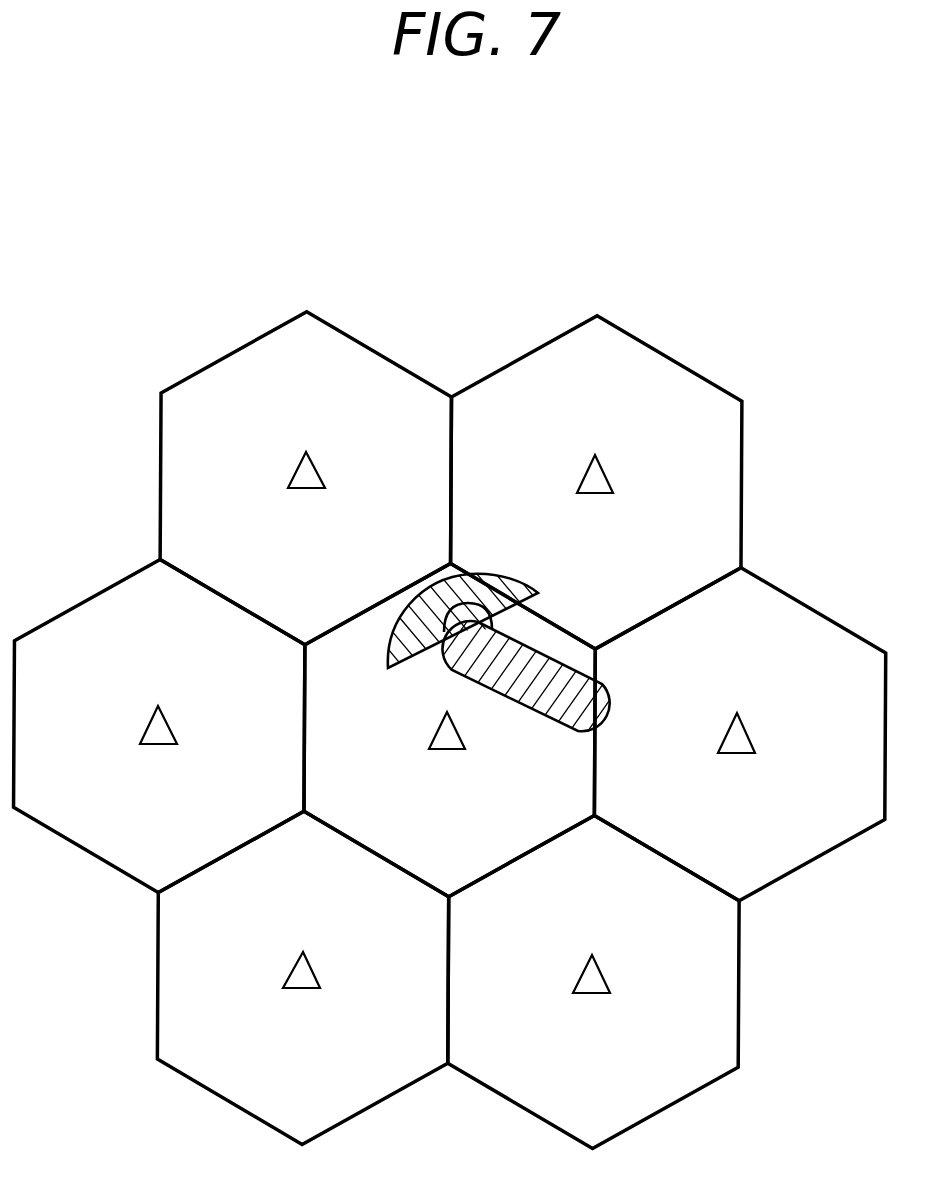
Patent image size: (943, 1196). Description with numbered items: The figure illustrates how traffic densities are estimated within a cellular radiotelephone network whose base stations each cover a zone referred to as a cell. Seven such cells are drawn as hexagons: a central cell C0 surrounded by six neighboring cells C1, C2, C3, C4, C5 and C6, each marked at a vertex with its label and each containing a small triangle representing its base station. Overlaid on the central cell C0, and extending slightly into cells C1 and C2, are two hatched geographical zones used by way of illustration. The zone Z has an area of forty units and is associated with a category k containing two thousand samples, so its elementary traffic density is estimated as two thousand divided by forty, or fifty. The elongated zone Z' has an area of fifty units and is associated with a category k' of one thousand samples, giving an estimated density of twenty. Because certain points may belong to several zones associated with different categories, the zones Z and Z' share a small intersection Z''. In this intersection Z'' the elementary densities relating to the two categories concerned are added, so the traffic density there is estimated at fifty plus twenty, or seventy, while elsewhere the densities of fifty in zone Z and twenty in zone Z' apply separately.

The cell C0 is at (406, 872).
The cell C1 is at (260, 336).
The cell C2 is at (551, 336).
The cell C3 is at (842, 620).
The cell C4 is at (551, 1124).
The cell C5 is at (260, 1124).
The cell C6 is at (14, 763).
The zone Z is at (466, 617).
The zone Z' is at (546, 690).
The intersection zone Z'' is at (449, 654).